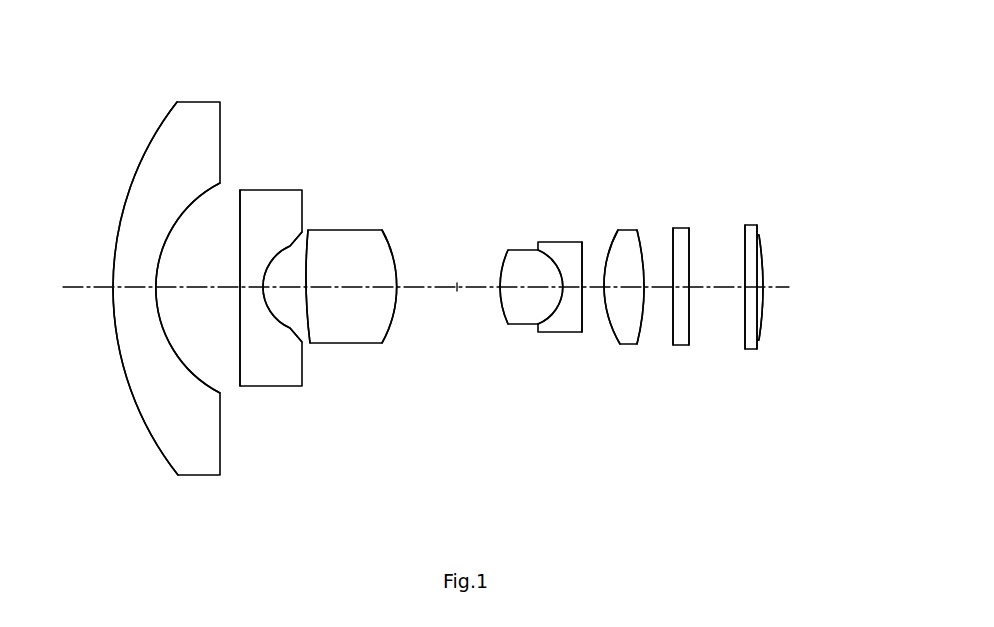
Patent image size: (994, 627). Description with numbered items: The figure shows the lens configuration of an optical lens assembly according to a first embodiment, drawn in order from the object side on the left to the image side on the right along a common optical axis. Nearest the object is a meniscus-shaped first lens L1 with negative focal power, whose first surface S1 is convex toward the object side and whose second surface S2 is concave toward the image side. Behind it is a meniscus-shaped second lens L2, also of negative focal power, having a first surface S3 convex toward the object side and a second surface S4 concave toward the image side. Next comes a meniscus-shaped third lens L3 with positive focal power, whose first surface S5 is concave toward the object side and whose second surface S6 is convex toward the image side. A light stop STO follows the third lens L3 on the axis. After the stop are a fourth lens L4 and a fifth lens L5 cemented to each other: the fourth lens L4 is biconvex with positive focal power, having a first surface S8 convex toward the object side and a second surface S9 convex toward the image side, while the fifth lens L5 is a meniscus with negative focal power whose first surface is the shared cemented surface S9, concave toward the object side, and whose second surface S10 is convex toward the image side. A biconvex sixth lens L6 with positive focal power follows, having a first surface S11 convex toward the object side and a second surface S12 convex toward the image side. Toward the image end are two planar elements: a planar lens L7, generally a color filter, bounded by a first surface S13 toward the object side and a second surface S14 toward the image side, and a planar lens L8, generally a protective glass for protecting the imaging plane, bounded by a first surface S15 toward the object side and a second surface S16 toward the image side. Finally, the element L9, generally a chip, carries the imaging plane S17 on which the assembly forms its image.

The first lens L1 is at (188, 452).
The second lens L2 is at (283, 367).
The third lens L3 is at (357, 332).
The fourth lens L4 is at (522, 315).
The fifth lens L5 is at (568, 318).
The sixth lens L6 is at (630, 345).
The planar lens L7 is at (682, 345).
The planar lens L8 is at (750, 347).
The chip L9 is at (756, 349).
The light stop STO is at (457, 287).
The first surface of first lens S1 is at (147, 148).
The second surface of first lens S2 is at (198, 190).
The first surface of second lens S3 is at (240, 190).
The second surface of second lens S4 is at (290, 232).
The first surface of third lens S5 is at (312, 253).
The second surface of third lens S6 is at (393, 250).
The first surface of fourth lens S8 is at (502, 280).
The cemented surface S9 is at (547, 243).
The second surface of fifth lens S10 is at (581, 247).
The first surface of sixth lens S11 is at (613, 230).
The second surface of sixth lens S12 is at (643, 243).
The first surface of planar lens L7 S13 is at (673, 228).
The second surface of planar lens L7 S14 is at (690, 228).
The first surface of planar lens L8 S15 is at (745, 227).
The second surface of planar lens L8 S16 is at (760, 235).
The imaging plane S17 is at (762, 237).